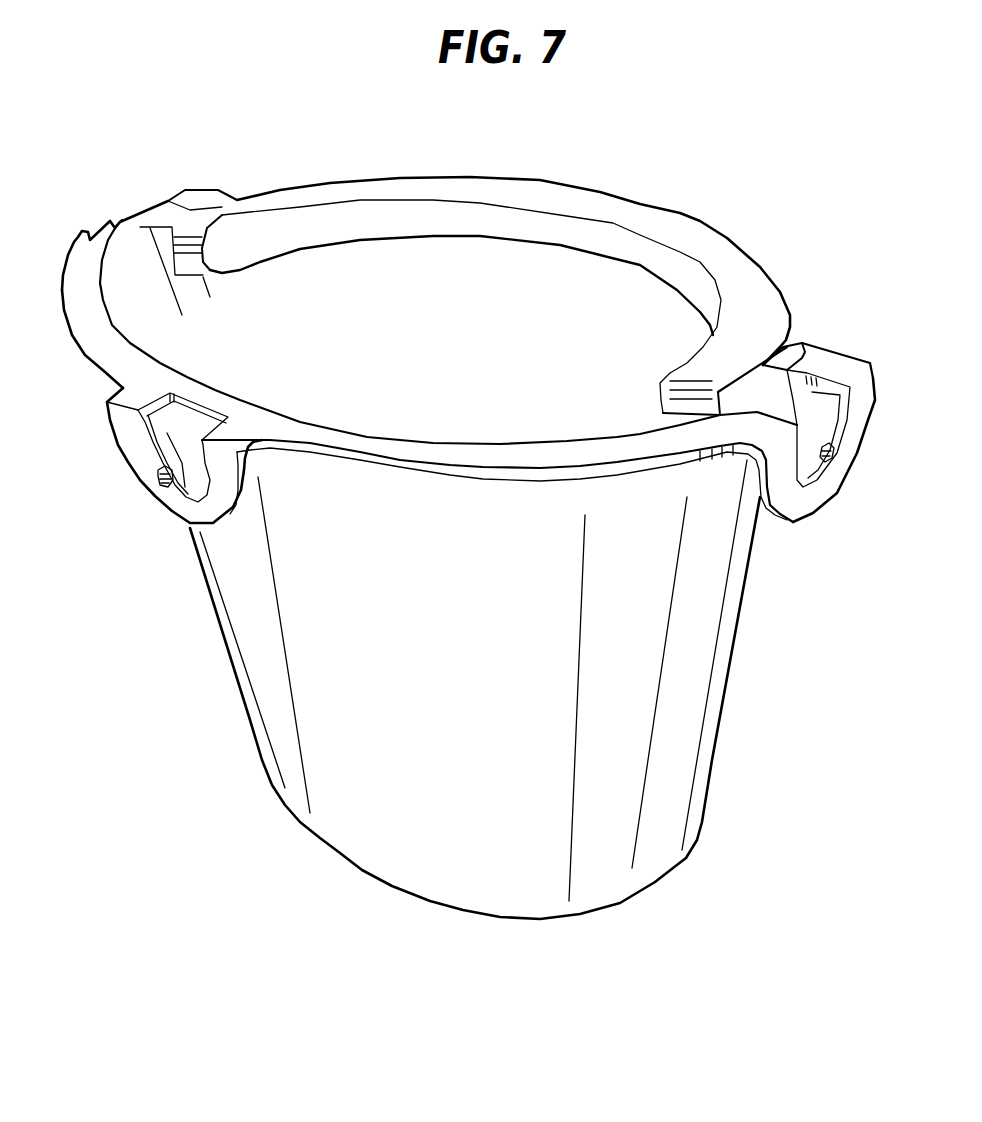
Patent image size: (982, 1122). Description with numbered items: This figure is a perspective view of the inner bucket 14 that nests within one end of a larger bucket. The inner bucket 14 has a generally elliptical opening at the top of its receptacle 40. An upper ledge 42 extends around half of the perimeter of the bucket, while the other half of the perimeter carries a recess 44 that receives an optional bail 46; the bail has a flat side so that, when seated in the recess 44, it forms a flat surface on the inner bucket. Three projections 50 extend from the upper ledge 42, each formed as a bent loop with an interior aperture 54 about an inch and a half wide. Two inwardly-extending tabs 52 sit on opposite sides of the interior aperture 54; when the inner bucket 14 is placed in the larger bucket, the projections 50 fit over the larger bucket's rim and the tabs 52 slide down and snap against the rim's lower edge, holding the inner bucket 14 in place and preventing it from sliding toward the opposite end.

The inner bucket 14 is at (251, 738).
The receptacle 40 is at (692, 689).
The upper ledge 42 is at (98, 340).
The recess 44 is at (609, 260).
The bail 46 is at (698, 253).
The projection 50 is at (195, 195).
The tab 52 is at (177, 493).
The interior aperture 54 is at (142, 431).